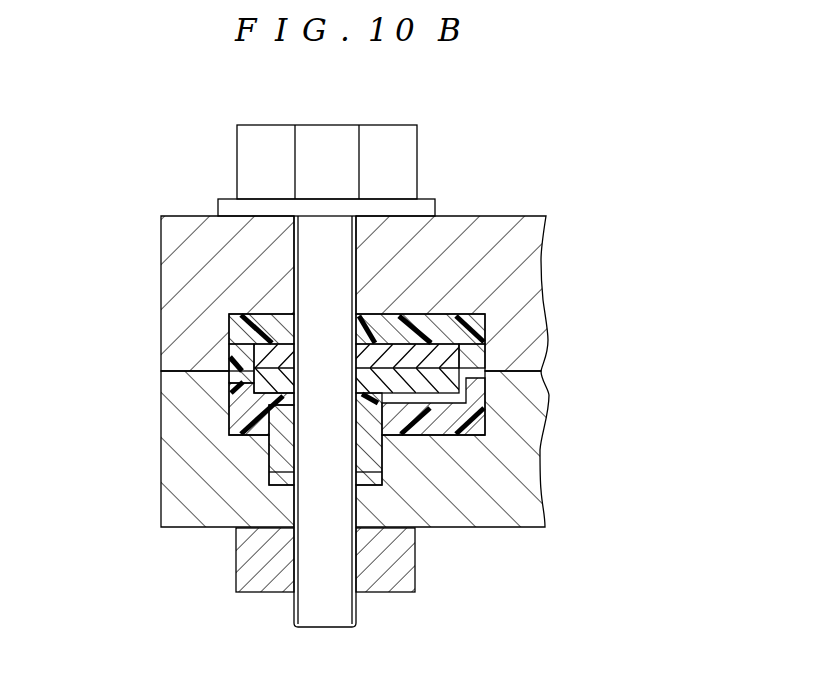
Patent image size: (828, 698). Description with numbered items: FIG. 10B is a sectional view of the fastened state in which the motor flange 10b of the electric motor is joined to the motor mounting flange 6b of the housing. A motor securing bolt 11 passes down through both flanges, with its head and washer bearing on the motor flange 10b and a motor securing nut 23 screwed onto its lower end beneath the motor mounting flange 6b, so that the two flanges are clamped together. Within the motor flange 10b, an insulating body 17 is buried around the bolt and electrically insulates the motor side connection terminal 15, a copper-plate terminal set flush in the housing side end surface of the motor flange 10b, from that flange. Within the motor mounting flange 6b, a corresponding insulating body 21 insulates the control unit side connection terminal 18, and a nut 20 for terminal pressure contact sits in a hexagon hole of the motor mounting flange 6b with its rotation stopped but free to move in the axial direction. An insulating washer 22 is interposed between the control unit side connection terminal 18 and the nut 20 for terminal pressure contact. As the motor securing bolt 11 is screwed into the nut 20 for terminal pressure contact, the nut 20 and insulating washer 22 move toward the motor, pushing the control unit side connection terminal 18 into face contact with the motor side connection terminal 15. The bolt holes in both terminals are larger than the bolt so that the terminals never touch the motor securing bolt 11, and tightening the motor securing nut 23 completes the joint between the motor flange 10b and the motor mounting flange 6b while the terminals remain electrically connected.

The motor securing bolt 11 is at (398, 149).
The motor flange 10b is at (525, 277).
The insulating body 17 is at (468, 335).
The motor side connection terminal 15 is at (254, 352).
The control unit side connection terminal 18 is at (253, 387).
The insulating body 21 is at (472, 402).
The insulating washer 22 is at (268, 398).
The nut for terminal pressure contact 20 is at (282, 453).
The motor mounting flange 6b is at (523, 465).
The motor securing nut 23 is at (398, 562).